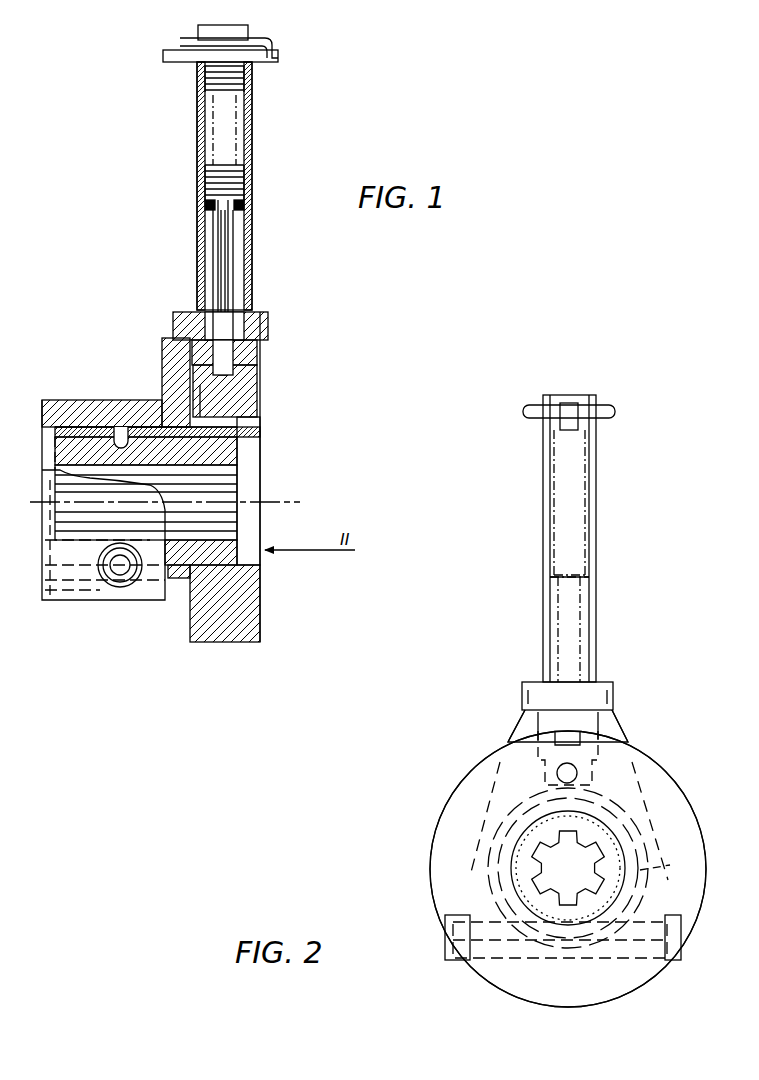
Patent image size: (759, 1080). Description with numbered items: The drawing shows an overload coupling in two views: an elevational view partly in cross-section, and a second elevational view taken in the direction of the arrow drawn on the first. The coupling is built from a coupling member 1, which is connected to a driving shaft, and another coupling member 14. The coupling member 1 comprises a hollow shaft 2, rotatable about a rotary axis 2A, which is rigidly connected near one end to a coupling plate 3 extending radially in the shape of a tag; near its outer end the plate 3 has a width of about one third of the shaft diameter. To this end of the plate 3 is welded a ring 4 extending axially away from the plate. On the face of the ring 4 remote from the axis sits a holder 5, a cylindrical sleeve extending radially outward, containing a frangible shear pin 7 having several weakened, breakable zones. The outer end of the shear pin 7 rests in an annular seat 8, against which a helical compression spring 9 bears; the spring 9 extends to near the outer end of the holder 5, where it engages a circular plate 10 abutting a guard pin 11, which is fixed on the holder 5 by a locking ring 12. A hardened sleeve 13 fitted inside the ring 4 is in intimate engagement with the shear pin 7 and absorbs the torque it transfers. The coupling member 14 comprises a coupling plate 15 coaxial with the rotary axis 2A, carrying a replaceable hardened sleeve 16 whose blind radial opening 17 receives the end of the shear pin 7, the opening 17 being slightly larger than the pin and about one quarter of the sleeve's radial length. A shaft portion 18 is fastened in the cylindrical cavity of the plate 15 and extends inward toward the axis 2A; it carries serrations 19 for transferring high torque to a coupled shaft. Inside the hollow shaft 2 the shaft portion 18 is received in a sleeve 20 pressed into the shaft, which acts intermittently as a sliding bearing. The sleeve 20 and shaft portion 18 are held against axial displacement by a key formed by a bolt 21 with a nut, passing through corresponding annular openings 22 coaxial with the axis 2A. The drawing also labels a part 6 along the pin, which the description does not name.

In FIG. 1, the coupling member 1 is at (90, 398).
In FIG. 1, the hollow shaft 2 is at (62, 401).
In FIG. 1, the rotary axis 2A is at (282, 498).
In FIG. 2, the rotary axis 2A is at (568, 868).
In FIG. 1, the coupling plate 3 is at (170, 355).
In FIG. 2, the coupling plate 3 is at (612, 730).
In FIG. 1, the ring 4 is at (268, 326).
In FIG. 2, the ring 4 is at (613, 696).
In FIG. 1, the holder 5 is at (252, 131).
In FIG. 2, the holder 5 is at (543, 530).
In FIG. 1, the rod 6 is at (216, 248).
In FIG. 1, the shear pin 7 is at (228, 258).
In FIG. 2, the shear pin 7 is at (565, 612).
In FIG. 1, the annular seat 8 is at (205, 207).
In FIG. 1, the helical compression spring 9 is at (205, 182).
In FIG. 2, the helical compression spring 9 is at (543, 476).
In FIG. 1, the circular plate 10 is at (205, 70).
In FIG. 1, the guard pin 11 is at (163, 56).
In FIG. 2, the guard pin 11 is at (567, 404).
In FIG. 1, the locking ring 12 is at (180, 40).
In FIG. 2, the locking ring 12 is at (525, 412).
In FIG. 1, the sleeve 13 is at (257, 355).
In FIG. 2, the sleeve 13 is at (525, 718).
In FIG. 1, the coupling member 14 is at (264, 432).
In FIG. 2, the coupling member 14 is at (435, 814).
In FIG. 1, the coupling plate 15 is at (258, 608).
In FIG. 2, the coupling plate 15 is at (433, 873).
In FIG. 1, the sleeve 16 is at (242, 430).
In FIG. 2, the sleeve 16 is at (538, 780).
In FIG. 1, the opening 17 is at (232, 370).
In FIG. 1, the shaft portion 18 is at (226, 545).
In FIG. 2, the shaft portion 18 is at (590, 830).
In FIG. 1, the serrations 19 is at (222, 470).
In FIG. 2, the serrations 19 is at (520, 864).
In FIG. 1, the sleeve 20 is at (185, 580).
In FIG. 2, the sleeve 20 is at (672, 856).
In FIG. 1, the bolt 21 is at (125, 553).
In FIG. 2, the bolt 21 is at (680, 950).
In FIG. 1, the annular openings 22 is at (122, 430).